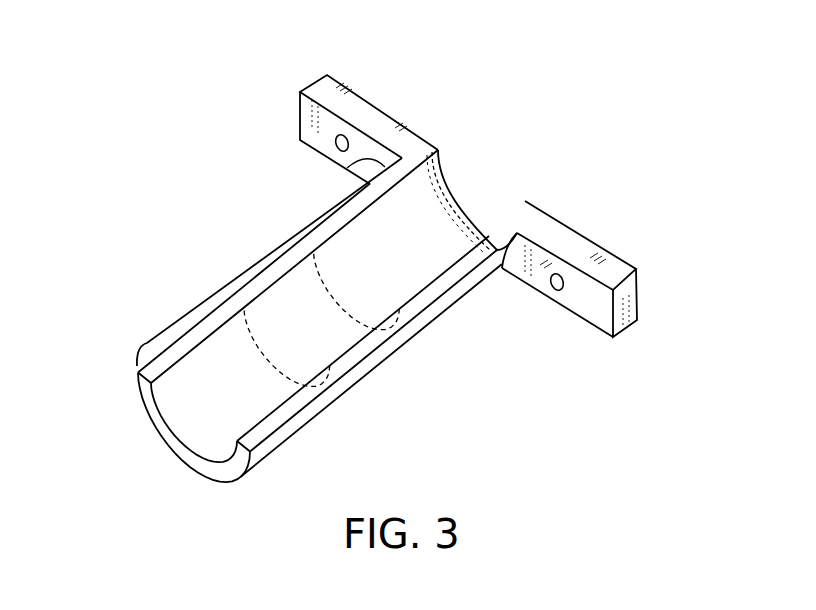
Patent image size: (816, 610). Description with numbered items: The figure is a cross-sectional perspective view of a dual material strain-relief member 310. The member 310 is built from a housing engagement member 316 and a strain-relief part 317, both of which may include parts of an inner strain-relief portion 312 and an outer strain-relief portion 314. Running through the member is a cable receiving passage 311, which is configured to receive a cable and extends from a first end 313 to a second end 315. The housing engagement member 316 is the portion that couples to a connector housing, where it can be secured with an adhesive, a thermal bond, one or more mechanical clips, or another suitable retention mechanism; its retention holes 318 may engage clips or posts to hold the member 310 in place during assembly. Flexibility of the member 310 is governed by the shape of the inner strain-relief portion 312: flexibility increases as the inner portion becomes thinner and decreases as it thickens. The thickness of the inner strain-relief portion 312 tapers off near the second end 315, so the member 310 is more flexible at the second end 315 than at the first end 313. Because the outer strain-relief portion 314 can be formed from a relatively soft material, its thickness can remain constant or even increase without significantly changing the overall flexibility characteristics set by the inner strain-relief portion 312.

The dual material strain-relief member 310 is at (557, 137).
The cable receiving passage 311 is at (187, 408).
The inner strain-relief portion 312 is at (493, 233).
The first end 313 is at (445, 172).
The outer strain-relief portion 314 is at (310, 412).
The second end 315 is at (188, 453).
The housing engagement member 316 is at (618, 262).
The strain-relief part 317 is at (258, 238).
The retention holes 318 is at (333, 145).